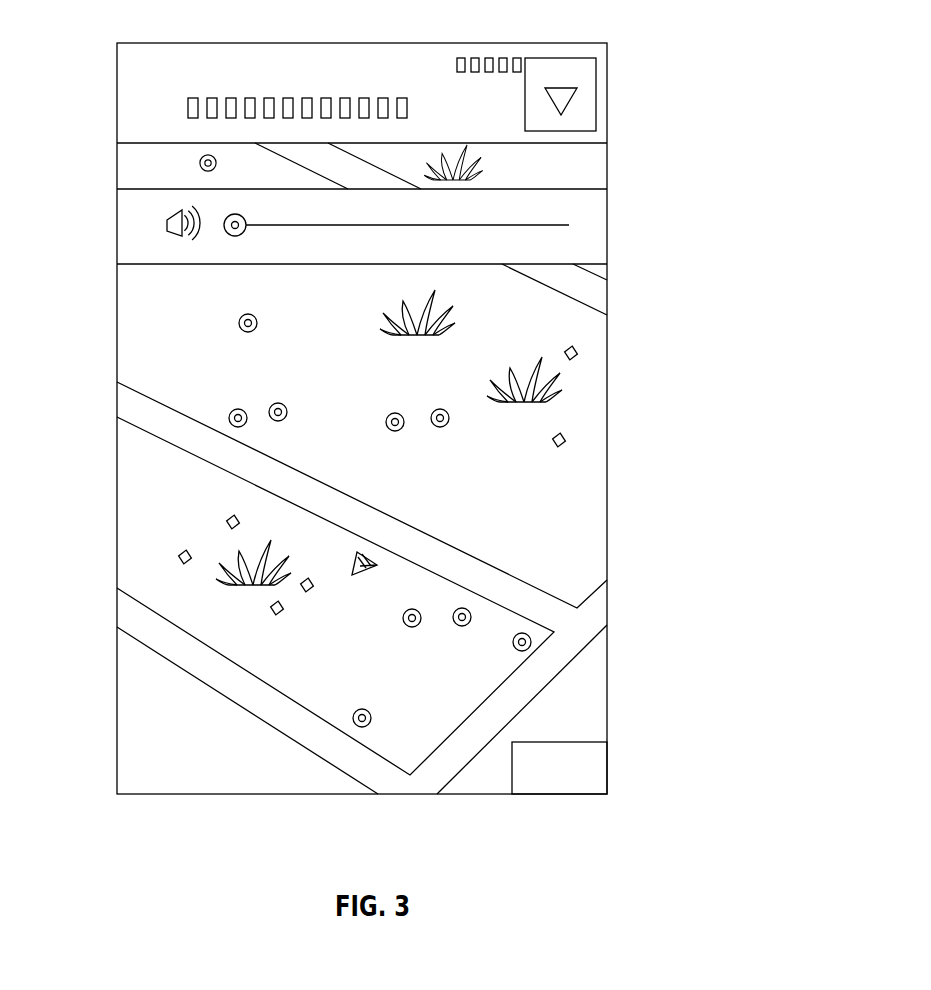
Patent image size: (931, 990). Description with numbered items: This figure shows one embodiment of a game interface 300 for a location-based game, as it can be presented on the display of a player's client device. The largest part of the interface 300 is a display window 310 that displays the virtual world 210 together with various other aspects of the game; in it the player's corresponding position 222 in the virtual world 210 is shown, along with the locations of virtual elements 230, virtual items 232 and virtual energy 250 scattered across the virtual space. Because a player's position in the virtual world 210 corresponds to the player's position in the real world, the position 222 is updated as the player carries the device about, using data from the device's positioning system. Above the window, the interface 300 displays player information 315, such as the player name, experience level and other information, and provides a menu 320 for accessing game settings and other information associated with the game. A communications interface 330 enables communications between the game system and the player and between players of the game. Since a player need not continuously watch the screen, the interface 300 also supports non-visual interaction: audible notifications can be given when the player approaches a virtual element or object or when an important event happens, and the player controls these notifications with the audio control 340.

The game interface 300 is at (706, 124).
The display window 310 is at (598, 172).
The player information 315 is at (128, 62).
The menu 320 is at (589, 96).
The communications interface 330 is at (602, 772).
The audio control 340 is at (128, 210).
The virtual world 210 is at (598, 500).
The player position in the virtual world 222 is at (352, 578).
The virtual elements 230 is at (388, 318).
The virtual items 232 is at (232, 522).
The virtual energy 250 is at (257, 325).